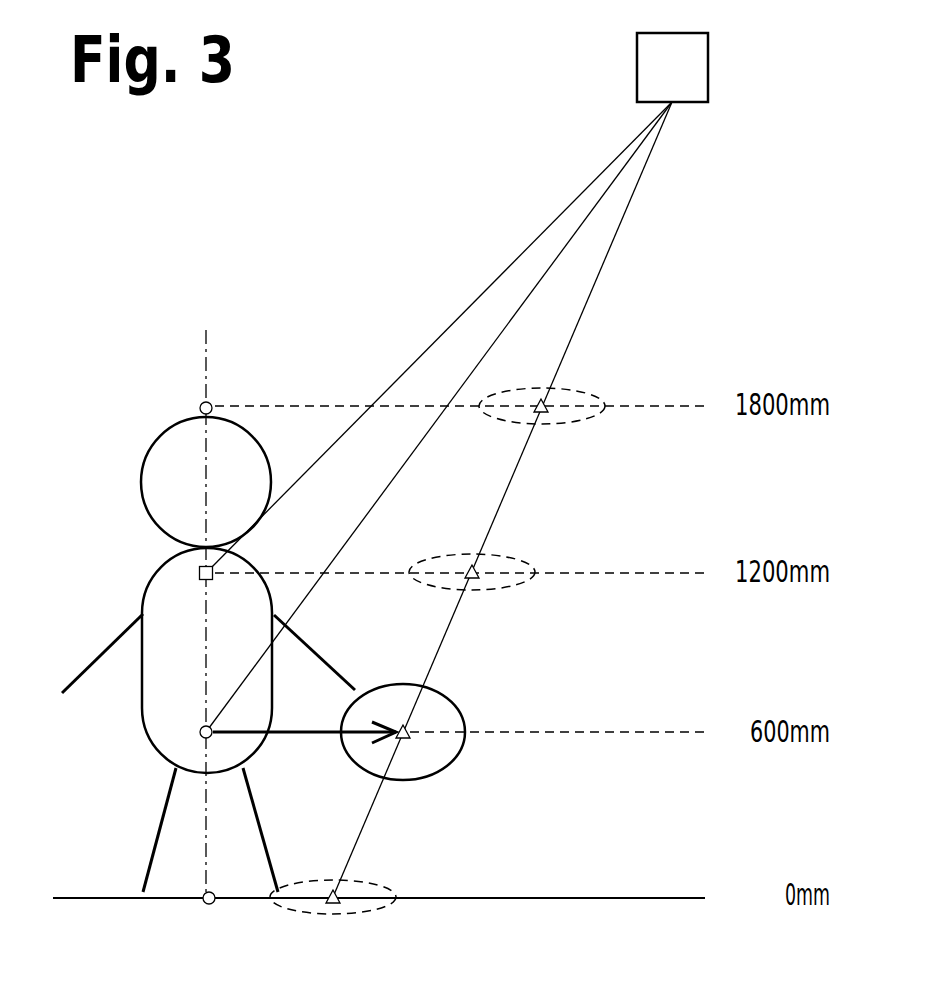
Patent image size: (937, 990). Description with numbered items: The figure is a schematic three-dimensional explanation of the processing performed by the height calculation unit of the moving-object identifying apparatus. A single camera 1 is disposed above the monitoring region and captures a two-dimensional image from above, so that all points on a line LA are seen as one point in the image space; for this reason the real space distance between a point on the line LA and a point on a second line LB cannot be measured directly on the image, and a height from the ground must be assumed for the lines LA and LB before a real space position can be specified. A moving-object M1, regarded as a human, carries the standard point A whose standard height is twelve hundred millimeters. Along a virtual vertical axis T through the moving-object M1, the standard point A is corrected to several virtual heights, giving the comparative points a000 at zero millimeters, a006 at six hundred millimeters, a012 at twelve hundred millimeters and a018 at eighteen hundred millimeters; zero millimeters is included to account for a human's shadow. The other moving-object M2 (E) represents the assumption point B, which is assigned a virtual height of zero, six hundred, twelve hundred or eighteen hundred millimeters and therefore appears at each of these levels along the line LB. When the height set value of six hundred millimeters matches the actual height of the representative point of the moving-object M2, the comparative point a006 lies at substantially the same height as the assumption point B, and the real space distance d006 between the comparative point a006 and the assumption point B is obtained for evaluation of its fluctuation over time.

The camera 1 is at (647, 66).
The virtual vertical axis T is at (204, 347).
The line LA is at (477, 300).
The line LB is at (590, 299).
The moving-object M1 is at (142, 597).
The comparative point a018 is at (200, 407).
The standard point A is at (123, 535).
The comparative point a012 is at (199, 575).
The comparative point a006 is at (200, 733).
The comparative point a000 is at (208, 905).
The real space distance d006 is at (295, 740).
The assumption point B is at (412, 737).
The moving-object M2 is at (560, 422).